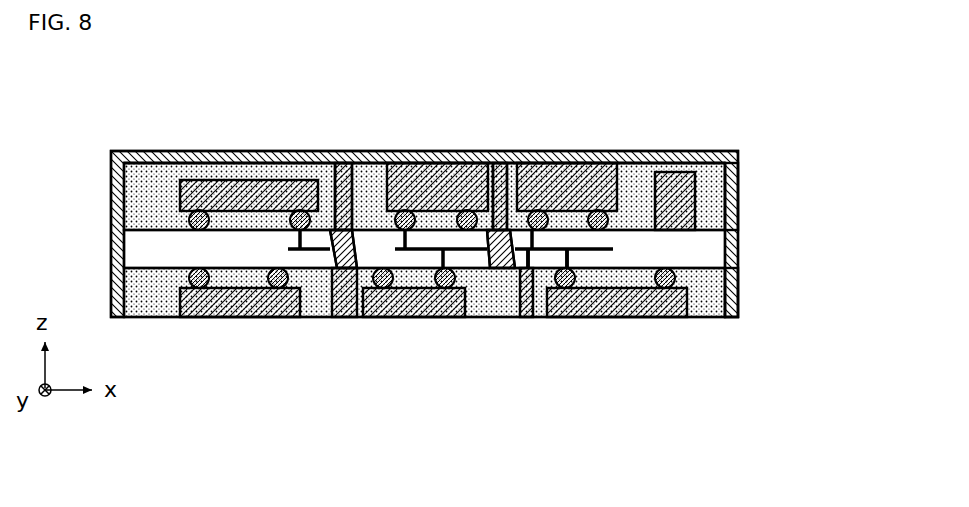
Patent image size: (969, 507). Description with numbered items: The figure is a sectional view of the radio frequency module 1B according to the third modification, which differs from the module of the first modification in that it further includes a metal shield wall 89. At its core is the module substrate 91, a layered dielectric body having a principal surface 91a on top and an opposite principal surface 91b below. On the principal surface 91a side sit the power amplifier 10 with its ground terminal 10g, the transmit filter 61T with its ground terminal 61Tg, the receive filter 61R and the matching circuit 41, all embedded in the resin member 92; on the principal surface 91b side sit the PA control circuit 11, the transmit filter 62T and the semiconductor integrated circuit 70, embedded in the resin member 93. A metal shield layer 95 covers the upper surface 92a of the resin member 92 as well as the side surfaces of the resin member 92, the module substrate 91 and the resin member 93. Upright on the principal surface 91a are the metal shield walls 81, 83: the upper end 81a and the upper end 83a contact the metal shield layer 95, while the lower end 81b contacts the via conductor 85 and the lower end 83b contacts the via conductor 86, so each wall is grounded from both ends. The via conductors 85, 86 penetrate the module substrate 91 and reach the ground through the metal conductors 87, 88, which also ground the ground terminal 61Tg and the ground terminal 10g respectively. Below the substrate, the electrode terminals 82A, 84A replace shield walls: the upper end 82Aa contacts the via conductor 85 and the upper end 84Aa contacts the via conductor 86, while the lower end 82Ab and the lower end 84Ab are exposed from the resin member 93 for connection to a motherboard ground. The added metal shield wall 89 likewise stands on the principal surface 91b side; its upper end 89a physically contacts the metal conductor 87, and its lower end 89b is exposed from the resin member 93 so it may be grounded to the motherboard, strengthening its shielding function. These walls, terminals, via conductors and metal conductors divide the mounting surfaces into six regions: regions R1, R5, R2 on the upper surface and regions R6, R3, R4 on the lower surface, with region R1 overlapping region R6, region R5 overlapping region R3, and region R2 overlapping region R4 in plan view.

The radio frequency module 1B is at (752, 124).
The metal shield layer 95 is at (157, 151).
The resin member 92 is at (138, 198).
The upper surface 92a is at (185, 163).
The resin member 93 is at (138, 293).
The module substrate 91 is at (700, 255).
The principal surface 91a is at (713, 228).
The principal surface 91b is at (718, 300).
The power amplifier 10 is at (236, 182).
The ground terminal 10g is at (298, 212).
The PA control circuit 11 is at (233, 303).
The matching circuit 41 is at (673, 180).
The transmit filter 61T is at (450, 185).
The ground terminal 61Tg is at (403, 212).
The receive filter 61R is at (582, 183).
The transmit filter 62T is at (423, 305).
The semiconductor integrated circuit 70 is at (607, 252).
The metal shield wall 81 is at (497, 172).
The upper end 81a is at (500, 178).
The lower end 81b is at (510, 170).
The electrode terminal 82A is at (503, 262).
The upper end 82Aa is at (490, 262).
The lower end 82Ab is at (498, 275).
The metal shield wall 83 is at (335, 175).
The upper end 83a is at (343, 168).
The lower end 83b is at (355, 170).
The electrode terminal 84A is at (332, 252).
The upper end 84Aa is at (325, 250).
The lower end 84Ab is at (352, 258).
The via conductor 85 is at (527, 292).
The via conductor 86 is at (348, 300).
The metal conductor 87 is at (638, 300).
The metal conductor 88 is at (292, 252).
The metal shield wall 89 is at (530, 275).
The upper end 89a is at (567, 262).
The lower end 89b is at (528, 262).
The region R1 is at (240, 151).
The region R2 is at (652, 151).
The region R3 is at (395, 320).
The region R4 is at (665, 325).
The region R5 is at (460, 151).
The region R6 is at (196, 318).